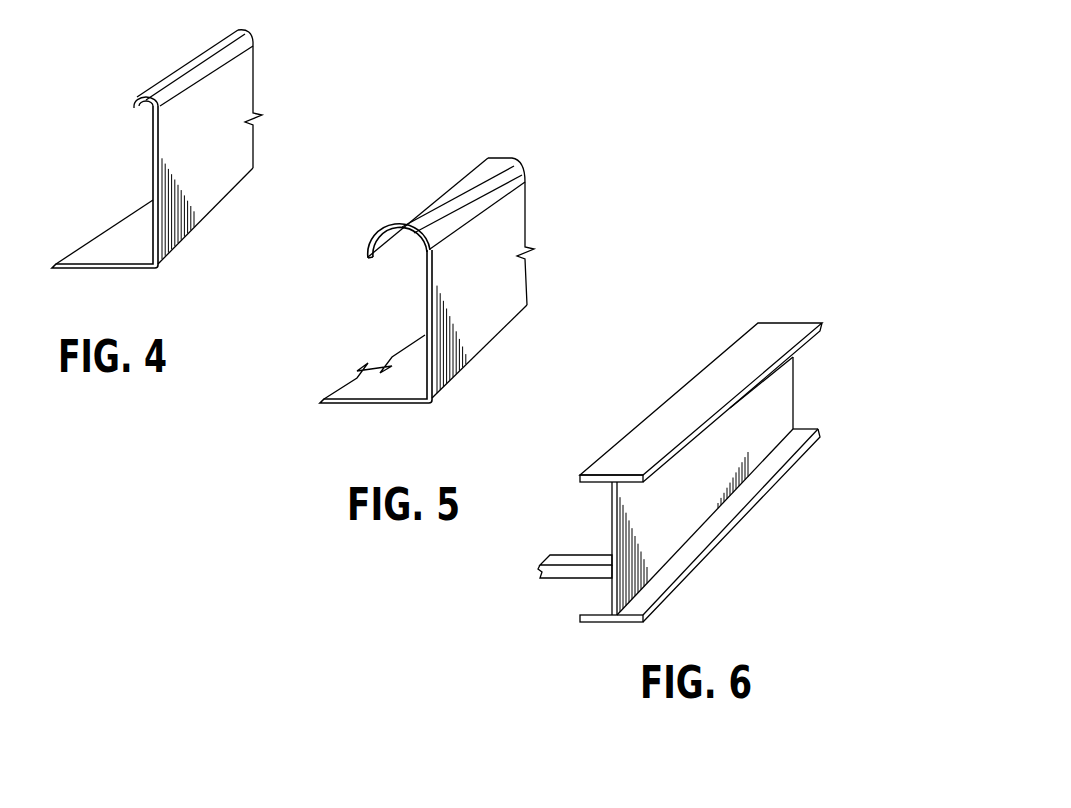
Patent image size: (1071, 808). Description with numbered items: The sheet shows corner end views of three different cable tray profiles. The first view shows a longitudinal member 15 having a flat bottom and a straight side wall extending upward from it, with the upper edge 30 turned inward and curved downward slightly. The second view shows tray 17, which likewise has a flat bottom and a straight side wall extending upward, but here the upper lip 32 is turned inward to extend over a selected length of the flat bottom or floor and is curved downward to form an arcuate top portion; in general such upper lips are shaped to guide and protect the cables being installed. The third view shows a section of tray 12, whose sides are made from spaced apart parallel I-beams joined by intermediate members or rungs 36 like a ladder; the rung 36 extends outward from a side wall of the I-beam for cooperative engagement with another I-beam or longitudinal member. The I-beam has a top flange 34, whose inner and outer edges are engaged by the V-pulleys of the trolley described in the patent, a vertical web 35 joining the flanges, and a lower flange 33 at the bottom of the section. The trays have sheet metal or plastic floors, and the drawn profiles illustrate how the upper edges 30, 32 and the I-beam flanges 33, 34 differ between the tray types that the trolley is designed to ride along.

In FIG. 6, the tray 12 is at (732, 457).
In FIG. 4, the angle member 15 is at (103, 275).
In FIG. 5, the tray 17 is at (372, 412).
In FIG. 4, the hemmed edge 30 is at (135, 107).
In FIG. 5, the upper lip 32 is at (463, 195).
In FIG. 6, the lower flange 33 is at (730, 407).
In FIG. 6, the top flange 34 is at (753, 364).
In FIG. 6, the upper flange 35 is at (652, 419).
In FIG. 6, the rungs 36 is at (577, 572).